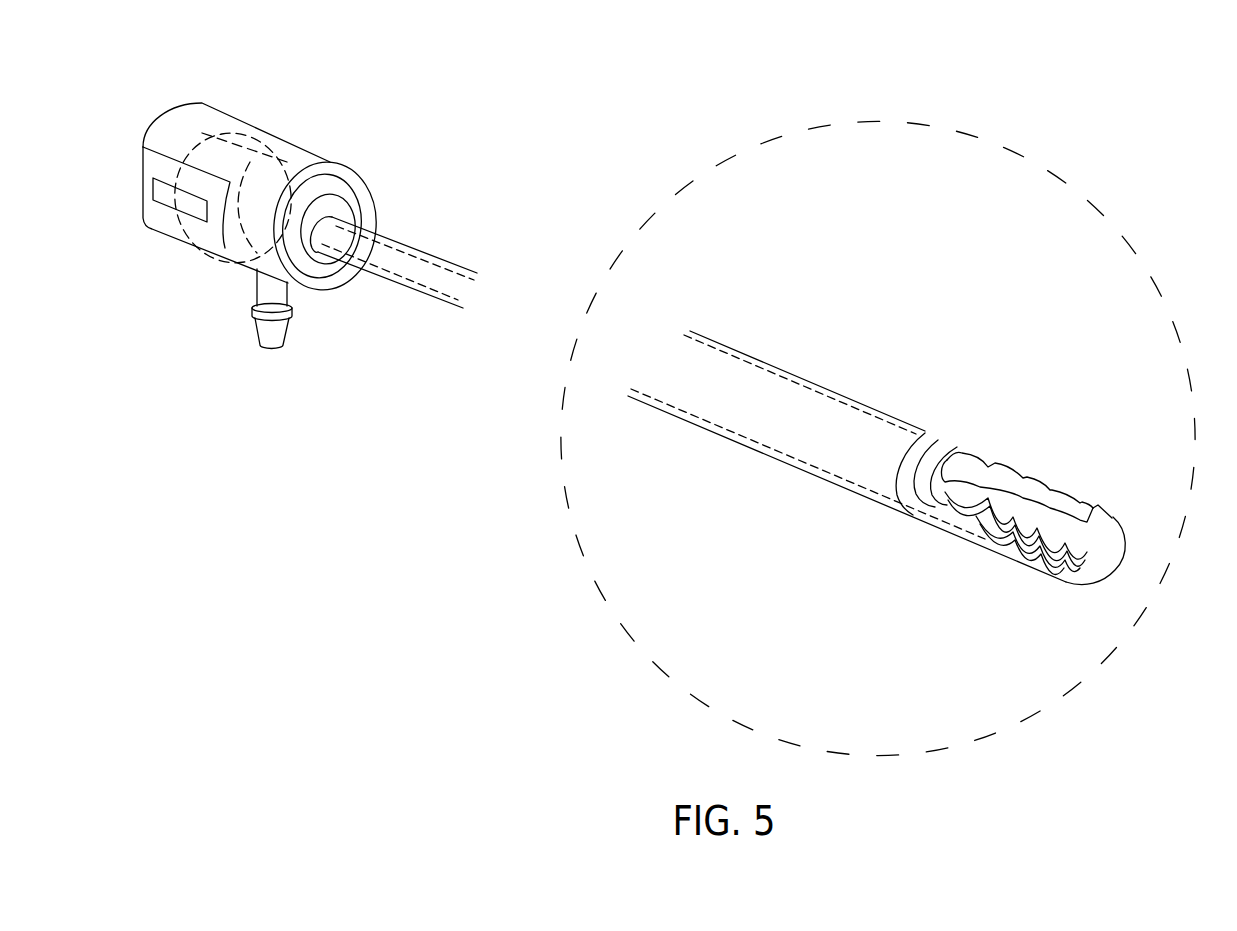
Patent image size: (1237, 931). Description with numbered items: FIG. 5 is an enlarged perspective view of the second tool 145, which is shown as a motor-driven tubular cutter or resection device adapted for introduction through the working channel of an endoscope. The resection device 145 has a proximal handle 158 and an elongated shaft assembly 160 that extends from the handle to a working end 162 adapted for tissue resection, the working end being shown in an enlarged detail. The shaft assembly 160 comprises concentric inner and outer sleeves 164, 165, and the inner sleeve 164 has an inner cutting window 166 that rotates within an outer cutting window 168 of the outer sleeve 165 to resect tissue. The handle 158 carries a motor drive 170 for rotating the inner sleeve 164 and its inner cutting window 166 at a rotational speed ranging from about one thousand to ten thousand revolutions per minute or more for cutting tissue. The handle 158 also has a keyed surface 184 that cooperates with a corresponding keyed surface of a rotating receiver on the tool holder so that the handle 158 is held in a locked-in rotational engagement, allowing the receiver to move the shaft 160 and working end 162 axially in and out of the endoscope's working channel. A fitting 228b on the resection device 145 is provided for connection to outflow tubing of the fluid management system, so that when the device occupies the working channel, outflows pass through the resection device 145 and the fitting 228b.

The second tool 145 is at (524, 120).
The proximal handle 158 is at (292, 157).
The elongated shaft assembly 160 is at (417, 247).
The working end 162 is at (1072, 405).
The inner sleeve 164 is at (962, 448).
The outer sleeve 165 is at (862, 498).
The inner cutting window 166 is at (983, 517).
The outer cutting window 168 is at (1017, 552).
The motor drive 170 is at (220, 136).
The keyed surface 184 is at (193, 233).
The fitting 228b is at (255, 337).